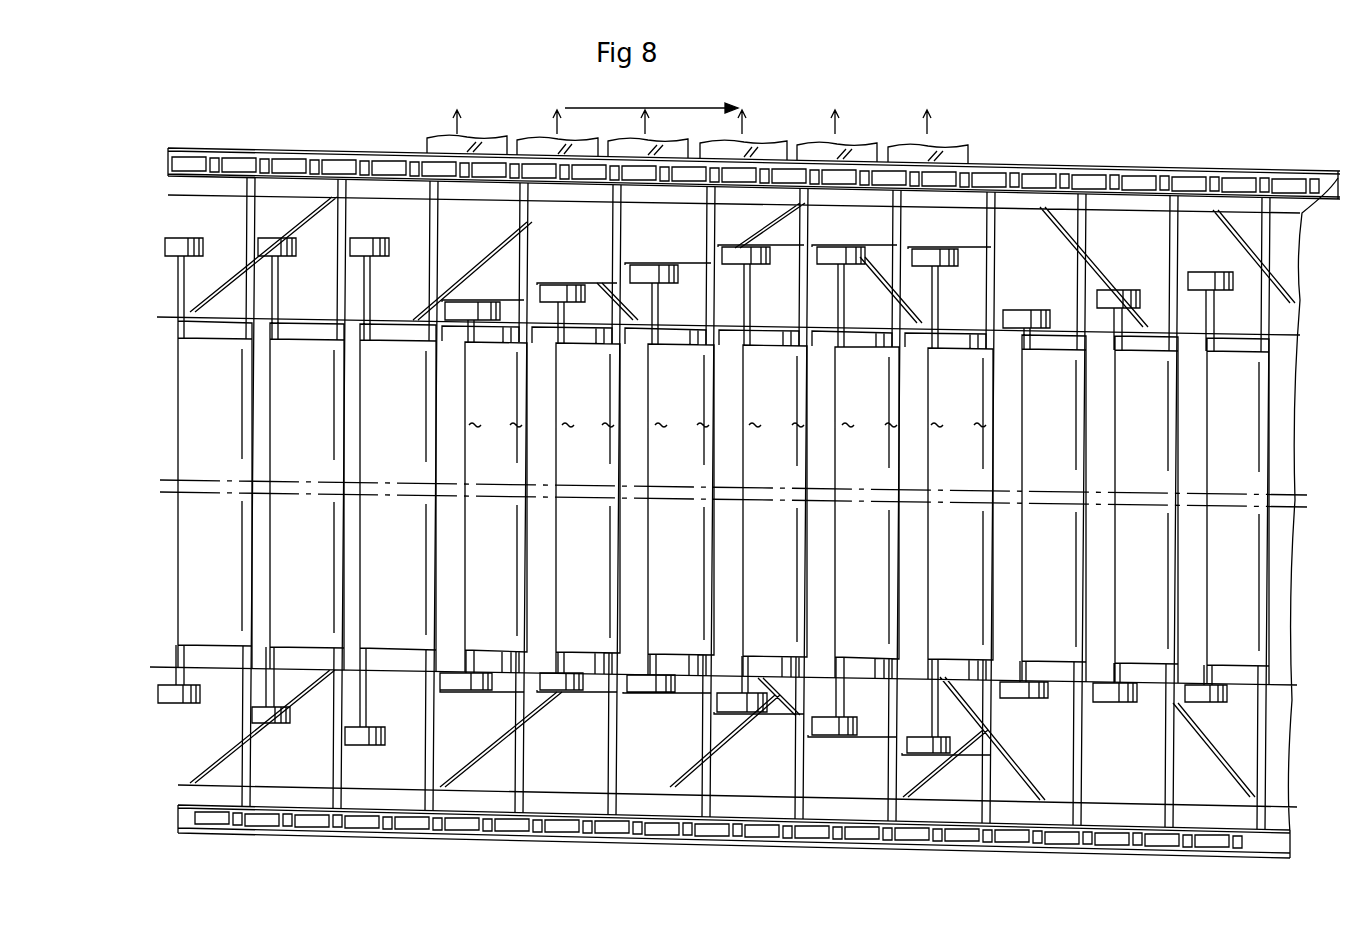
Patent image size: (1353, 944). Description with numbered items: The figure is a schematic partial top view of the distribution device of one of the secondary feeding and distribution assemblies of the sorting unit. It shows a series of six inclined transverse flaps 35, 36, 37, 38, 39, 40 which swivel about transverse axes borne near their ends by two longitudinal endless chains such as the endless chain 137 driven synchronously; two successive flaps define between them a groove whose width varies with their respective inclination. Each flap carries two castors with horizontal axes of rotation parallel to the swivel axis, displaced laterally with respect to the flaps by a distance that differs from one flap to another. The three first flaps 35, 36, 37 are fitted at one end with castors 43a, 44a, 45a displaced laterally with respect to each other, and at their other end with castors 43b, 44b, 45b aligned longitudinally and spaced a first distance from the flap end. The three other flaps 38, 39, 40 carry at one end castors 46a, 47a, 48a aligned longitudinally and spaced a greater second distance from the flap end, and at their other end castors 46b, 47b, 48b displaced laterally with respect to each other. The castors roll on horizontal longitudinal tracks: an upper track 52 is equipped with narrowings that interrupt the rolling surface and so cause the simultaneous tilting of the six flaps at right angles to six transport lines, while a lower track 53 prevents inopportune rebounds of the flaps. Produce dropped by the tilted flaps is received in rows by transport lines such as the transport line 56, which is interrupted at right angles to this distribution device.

The longitudinal endless chain 137 is at (420, 168).
The upper track 52 is at (401, 228).
The transport line 56 is at (767, 146).
The lower track 53 is at (1035, 225).
The inclined transverse flap 35 is at (484, 499).
The inclined transverse flap 36 is at (576, 500).
The inclined transverse flap 37 is at (669, 502).
The inclined transverse flap 38 is at (763, 503).
The inclined transverse flap 39 is at (855, 505).
The inclined transverse flap 40 is at (949, 506).
The castor 43a is at (465, 308).
The castor 44a is at (555, 290).
The castor 45a is at (655, 277).
The castor 46a is at (740, 257).
The castor 47a is at (838, 257).
The castor 48a is at (923, 257).
The castor 43b is at (463, 697).
The castor 44b is at (545, 680).
The castor 45b is at (641, 683).
The castor 46b is at (737, 704).
The castor 47b is at (830, 727).
The castor 48b is at (920, 746).